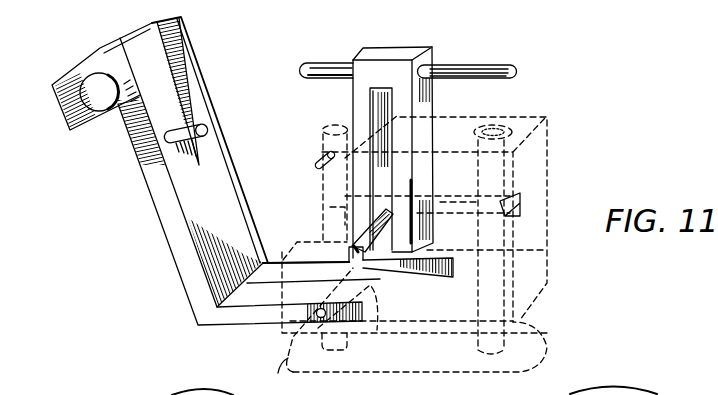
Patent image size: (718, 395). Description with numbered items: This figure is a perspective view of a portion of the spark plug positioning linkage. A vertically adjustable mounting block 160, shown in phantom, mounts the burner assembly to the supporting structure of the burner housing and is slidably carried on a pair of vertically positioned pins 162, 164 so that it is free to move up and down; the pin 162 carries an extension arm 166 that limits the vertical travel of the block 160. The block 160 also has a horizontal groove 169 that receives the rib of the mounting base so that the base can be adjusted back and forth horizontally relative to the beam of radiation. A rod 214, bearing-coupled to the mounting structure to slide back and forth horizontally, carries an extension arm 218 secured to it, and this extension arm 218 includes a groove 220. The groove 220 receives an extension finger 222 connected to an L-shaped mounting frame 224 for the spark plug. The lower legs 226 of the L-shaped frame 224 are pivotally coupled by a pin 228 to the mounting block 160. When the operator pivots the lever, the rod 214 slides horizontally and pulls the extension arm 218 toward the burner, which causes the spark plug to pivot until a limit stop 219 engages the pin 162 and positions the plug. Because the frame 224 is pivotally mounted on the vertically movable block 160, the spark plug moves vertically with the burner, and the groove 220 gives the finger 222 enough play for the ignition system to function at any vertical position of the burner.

The mounting block 160 is at (530, 163).
The pin 162 is at (332, 122).
The pin 164 is at (500, 117).
The extension arm 166 is at (317, 152).
The horizontal groove 169 is at (523, 208).
The rod 214 is at (469, 62).
The extension arm 218 is at (388, 50).
The limit stop 219 is at (188, 124).
The groove 220 is at (370, 181).
The extension finger 222 is at (392, 229).
The L-shaped mounting frame 224 is at (165, 235).
The lower legs 226 is at (257, 327).
The pin 228 is at (417, 320).